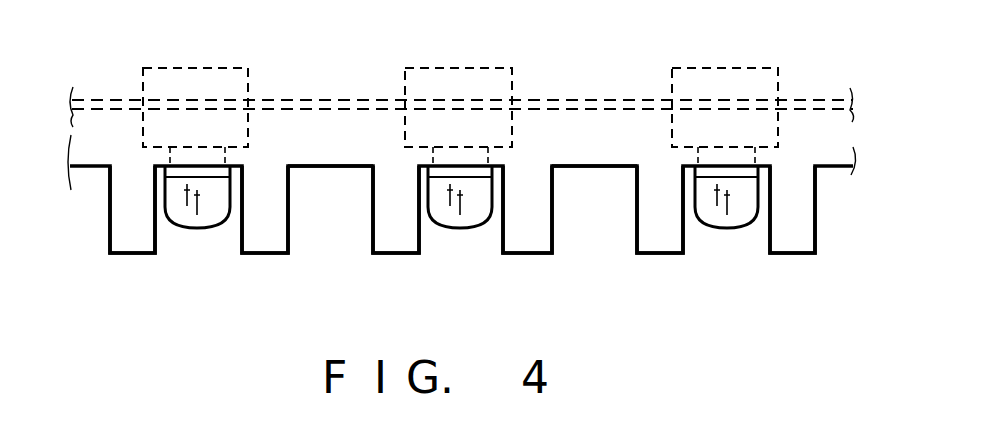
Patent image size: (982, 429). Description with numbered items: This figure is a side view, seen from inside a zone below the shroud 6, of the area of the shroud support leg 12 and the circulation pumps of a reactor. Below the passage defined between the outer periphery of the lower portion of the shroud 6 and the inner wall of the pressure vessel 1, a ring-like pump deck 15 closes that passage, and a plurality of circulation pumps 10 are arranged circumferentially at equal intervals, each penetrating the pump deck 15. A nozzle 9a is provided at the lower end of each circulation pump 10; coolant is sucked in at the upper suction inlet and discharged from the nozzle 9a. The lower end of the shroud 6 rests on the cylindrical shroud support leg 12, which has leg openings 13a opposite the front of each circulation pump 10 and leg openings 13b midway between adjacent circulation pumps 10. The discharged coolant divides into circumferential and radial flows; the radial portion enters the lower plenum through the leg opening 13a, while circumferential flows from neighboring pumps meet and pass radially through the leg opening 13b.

The pressure vessel 1 is at (724, 307).
The shroud 6 is at (601, 142).
The nozzle 9a is at (217, 196).
The circulation pump 10 is at (248, 80).
The shroud support leg 12 is at (135, 247).
The leg opening 13a is at (198, 233).
The leg opening 13b is at (332, 230).
The pump deck 15 is at (600, 97).